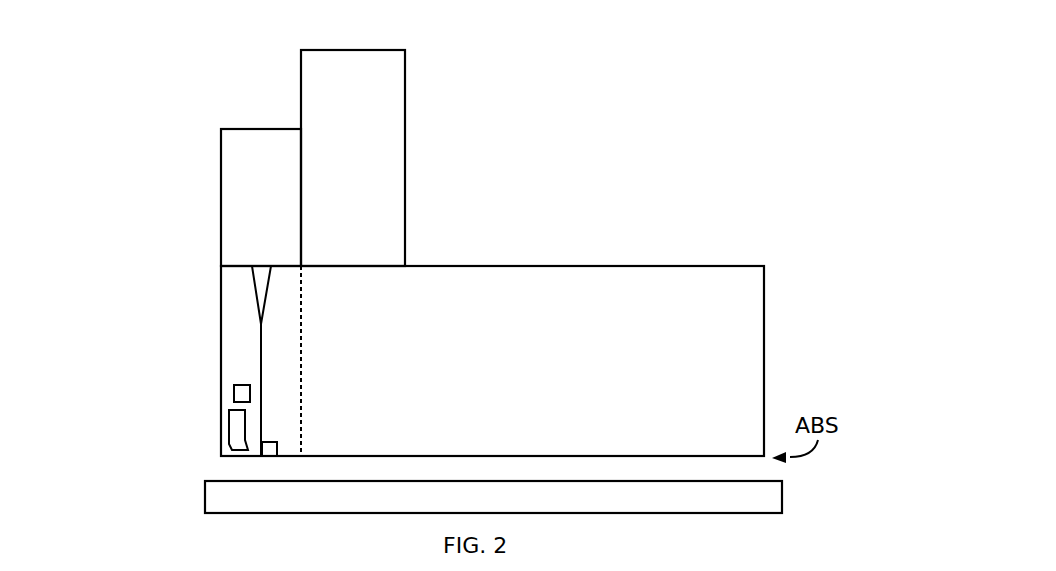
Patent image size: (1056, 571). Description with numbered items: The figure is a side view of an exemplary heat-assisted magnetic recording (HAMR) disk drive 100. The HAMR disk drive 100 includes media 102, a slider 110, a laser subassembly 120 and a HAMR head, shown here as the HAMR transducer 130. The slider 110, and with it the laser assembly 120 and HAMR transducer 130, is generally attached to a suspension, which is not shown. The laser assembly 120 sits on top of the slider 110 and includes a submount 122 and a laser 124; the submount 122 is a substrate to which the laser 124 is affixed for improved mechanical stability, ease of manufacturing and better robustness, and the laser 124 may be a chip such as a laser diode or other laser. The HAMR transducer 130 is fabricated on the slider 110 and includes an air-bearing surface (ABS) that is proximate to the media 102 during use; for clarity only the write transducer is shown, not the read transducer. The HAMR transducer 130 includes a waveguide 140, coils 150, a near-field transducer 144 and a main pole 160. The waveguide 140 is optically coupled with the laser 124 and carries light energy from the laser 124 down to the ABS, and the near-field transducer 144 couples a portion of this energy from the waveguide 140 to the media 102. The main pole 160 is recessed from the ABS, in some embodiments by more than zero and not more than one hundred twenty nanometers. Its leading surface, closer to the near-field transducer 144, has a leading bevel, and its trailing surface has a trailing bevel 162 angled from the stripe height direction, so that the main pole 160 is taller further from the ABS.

The HAMR disk drive 100 is at (497, 30).
The media 102 is at (205, 512).
The slider 110 is at (764, 328).
The laser subassembly 120 is at (129, 175).
The submount 122 is at (405, 140).
The laser 124 is at (221, 155).
The HAMR transducer 130 is at (302, 290).
The waveguide 140 is at (259, 345).
The near-field transducer 144 is at (277, 457).
The coil 150 is at (232, 382).
The main pole 160 is at (229, 410).
The trailing bevel 162 is at (220, 449).